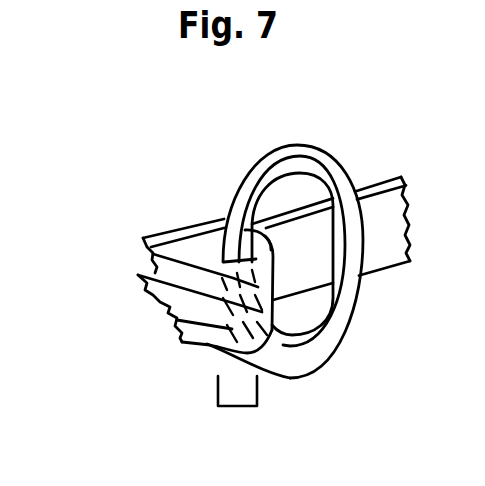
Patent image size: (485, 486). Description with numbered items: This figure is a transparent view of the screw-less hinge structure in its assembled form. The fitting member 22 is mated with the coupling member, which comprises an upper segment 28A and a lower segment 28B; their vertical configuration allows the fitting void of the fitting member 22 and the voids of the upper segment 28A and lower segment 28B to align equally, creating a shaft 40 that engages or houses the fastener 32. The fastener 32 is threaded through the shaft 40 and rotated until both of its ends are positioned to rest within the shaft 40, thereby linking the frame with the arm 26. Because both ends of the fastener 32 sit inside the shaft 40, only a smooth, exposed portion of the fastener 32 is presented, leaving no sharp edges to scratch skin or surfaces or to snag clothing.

The fitting member 22 is at (173, 296).
The arm 26 is at (393, 257).
The upper segment 28A is at (193, 248).
The lower segment 28B is at (217, 345).
The fastener 32 is at (320, 160).
The shaft 40 is at (237, 406).